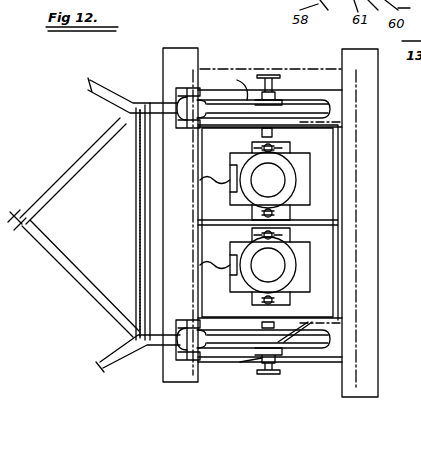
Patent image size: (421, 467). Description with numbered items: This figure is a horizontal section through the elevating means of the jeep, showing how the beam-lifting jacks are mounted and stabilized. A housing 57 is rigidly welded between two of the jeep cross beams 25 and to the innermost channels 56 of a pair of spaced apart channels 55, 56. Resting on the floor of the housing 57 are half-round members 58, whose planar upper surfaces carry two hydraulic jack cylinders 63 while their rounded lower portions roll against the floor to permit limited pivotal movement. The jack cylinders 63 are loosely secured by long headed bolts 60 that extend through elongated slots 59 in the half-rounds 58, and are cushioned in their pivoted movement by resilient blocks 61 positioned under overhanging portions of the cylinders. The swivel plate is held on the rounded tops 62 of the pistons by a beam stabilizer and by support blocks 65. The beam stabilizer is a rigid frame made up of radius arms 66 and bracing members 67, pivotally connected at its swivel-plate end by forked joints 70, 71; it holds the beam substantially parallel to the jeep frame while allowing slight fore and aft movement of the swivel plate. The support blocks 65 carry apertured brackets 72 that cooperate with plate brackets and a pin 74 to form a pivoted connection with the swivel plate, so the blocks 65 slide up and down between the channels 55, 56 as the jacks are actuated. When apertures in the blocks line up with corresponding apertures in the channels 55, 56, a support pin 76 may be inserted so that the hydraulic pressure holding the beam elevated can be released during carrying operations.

The jeep cross beams 25 is at (162, 157).
The channel 55 is at (305, 92).
The innermost channel 56 is at (337, 125).
The housing 57 is at (178, 207).
The half-round members 58 is at (285, 145).
The elongated slots 59 is at (255, 145).
The long headed bolts 60 is at (258, 213).
The resilient blocks 61 is at (305, 170).
The rounded tops 62 is at (268, 222).
The hydraulic jack cylinders 63 is at (250, 168).
The support blocks 65 is at (212, 340).
The radius arms 66 is at (112, 70).
The bracing members 67 is at (78, 160).
The forked joint 70 is at (183, 360).
The forked joint 71 is at (182, 92).
The apertured brackets 72 is at (238, 82).
The pin 74 is at (246, 367).
The support pin 76 is at (266, 73).